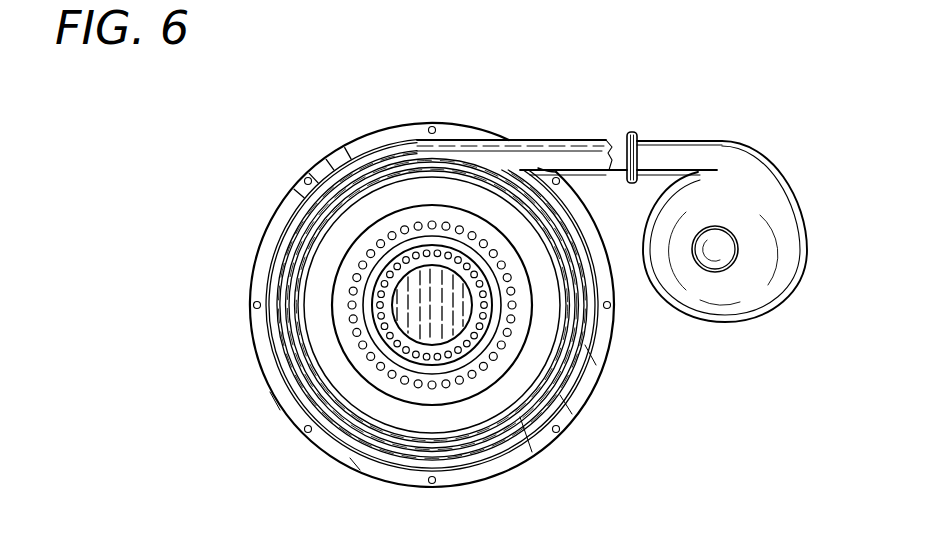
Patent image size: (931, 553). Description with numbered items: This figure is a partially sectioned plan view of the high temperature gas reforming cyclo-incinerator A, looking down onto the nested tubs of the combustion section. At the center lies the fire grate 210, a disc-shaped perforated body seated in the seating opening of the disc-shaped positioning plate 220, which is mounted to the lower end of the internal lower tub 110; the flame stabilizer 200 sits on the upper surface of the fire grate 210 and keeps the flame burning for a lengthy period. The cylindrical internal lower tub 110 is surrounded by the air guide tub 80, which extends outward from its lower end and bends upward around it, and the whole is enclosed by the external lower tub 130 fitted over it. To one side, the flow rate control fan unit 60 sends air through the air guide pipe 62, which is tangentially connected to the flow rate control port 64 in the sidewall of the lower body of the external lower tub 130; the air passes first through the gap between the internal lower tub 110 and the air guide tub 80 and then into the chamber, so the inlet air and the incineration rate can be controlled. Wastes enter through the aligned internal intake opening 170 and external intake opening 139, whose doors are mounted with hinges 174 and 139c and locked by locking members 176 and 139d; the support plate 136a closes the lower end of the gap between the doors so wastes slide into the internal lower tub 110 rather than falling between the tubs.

The high temperature gas reforming cyclo-incinerator A is at (233, 183).
The flow rate control fan unit 60 is at (735, 308).
The air guide pipe 62 is at (592, 145).
The flow rate control port 64 is at (500, 147).
The air guide tub 80 is at (325, 435).
The internal lower tub 110 is at (418, 170).
The external lower tub 130 is at (343, 162).
The support plate 136a is at (543, 438).
The external intake opening 139 is at (360, 463).
The hinges 139c is at (593, 362).
The locking member 139d is at (283, 392).
The internal intake opening 170 is at (297, 283).
The hinges 174 is at (568, 410).
The locking member 176 is at (300, 406).
The flame stabilizer 200 is at (395, 262).
The fire grate 210 is at (337, 312).
The positioning plate 220 is at (460, 417).